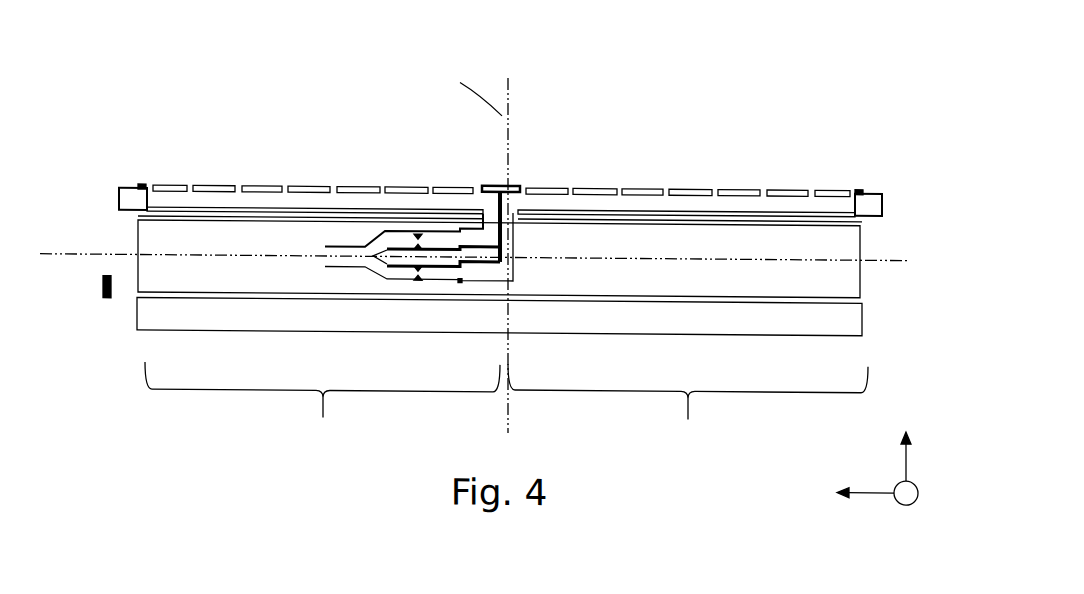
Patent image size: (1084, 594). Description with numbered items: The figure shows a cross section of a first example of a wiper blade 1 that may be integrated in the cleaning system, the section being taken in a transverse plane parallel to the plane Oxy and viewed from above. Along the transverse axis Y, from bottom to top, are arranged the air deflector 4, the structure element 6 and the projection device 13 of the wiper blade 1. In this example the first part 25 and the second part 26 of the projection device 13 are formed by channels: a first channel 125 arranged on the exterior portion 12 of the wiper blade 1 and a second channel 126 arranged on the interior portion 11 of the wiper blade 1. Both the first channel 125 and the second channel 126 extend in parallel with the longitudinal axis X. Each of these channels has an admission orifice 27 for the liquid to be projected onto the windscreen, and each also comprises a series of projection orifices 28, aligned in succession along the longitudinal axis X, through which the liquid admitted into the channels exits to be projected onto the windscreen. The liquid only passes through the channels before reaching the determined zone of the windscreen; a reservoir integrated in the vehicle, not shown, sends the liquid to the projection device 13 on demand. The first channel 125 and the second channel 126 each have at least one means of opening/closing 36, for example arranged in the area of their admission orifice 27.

The wiper blade 1 is at (262, 92).
The air deflector 4 is at (155, 308).
The structure element 6 is at (155, 242).
The interior portion 11 is at (688, 409).
The exterior portion 12 is at (322, 410).
The projection device 13 is at (520, 150).
The first part 25 is at (98, 182).
The first channel 125 is at (145, 186).
The second part 26 is at (908, 188).
The second channel 126 is at (863, 183).
The admission orifice 27 is at (463, 235).
The projection orifices 28 is at (159, 185).
The means of opening/closing 36 is at (417, 236).